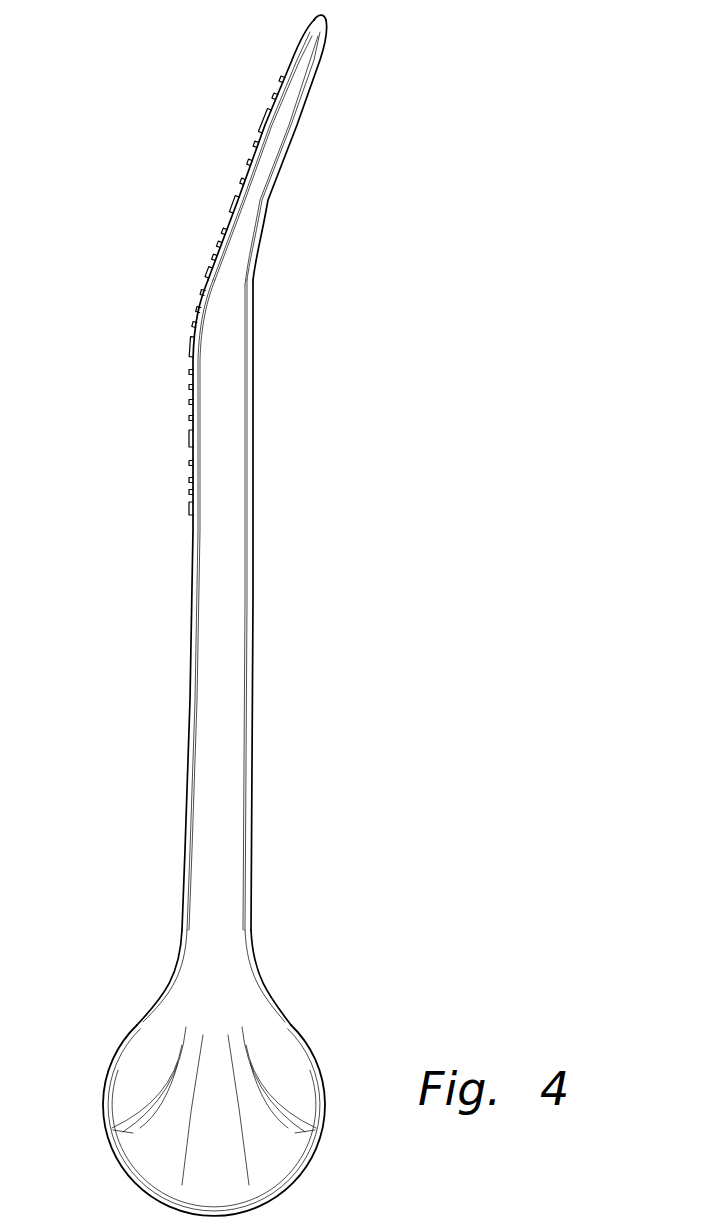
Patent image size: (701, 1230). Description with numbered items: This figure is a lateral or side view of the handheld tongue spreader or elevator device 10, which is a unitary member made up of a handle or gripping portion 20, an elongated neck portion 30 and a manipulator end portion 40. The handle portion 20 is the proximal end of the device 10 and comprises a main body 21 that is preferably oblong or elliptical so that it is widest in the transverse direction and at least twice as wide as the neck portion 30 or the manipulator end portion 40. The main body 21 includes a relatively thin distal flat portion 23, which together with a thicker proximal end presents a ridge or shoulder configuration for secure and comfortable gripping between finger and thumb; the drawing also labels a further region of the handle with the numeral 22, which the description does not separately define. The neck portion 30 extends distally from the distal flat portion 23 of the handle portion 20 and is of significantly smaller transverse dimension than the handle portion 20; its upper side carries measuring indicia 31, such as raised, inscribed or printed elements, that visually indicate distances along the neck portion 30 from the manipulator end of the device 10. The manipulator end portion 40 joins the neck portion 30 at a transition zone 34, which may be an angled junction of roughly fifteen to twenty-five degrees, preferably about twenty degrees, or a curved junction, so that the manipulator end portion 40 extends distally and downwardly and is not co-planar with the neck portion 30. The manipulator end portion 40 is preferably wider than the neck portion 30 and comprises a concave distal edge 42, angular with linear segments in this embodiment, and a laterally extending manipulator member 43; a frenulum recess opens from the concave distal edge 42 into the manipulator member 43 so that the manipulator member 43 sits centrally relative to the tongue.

The tongue elevator device 10 is at (392, 596).
The handle portion 20 is at (362, 1064).
The main body 21 is at (290, 1022).
The bowl bottom 22 is at (307, 1165).
The distal flat portion 23 is at (252, 908).
The neck portion 30 is at (138, 597).
The measuring indicia 31 is at (190, 465).
The transition zone 34 is at (228, 375).
The manipulator end portion 40 is at (214, 92).
The concave distal edge 42 is at (324, 16).
The manipulator member 43 is at (328, 48).